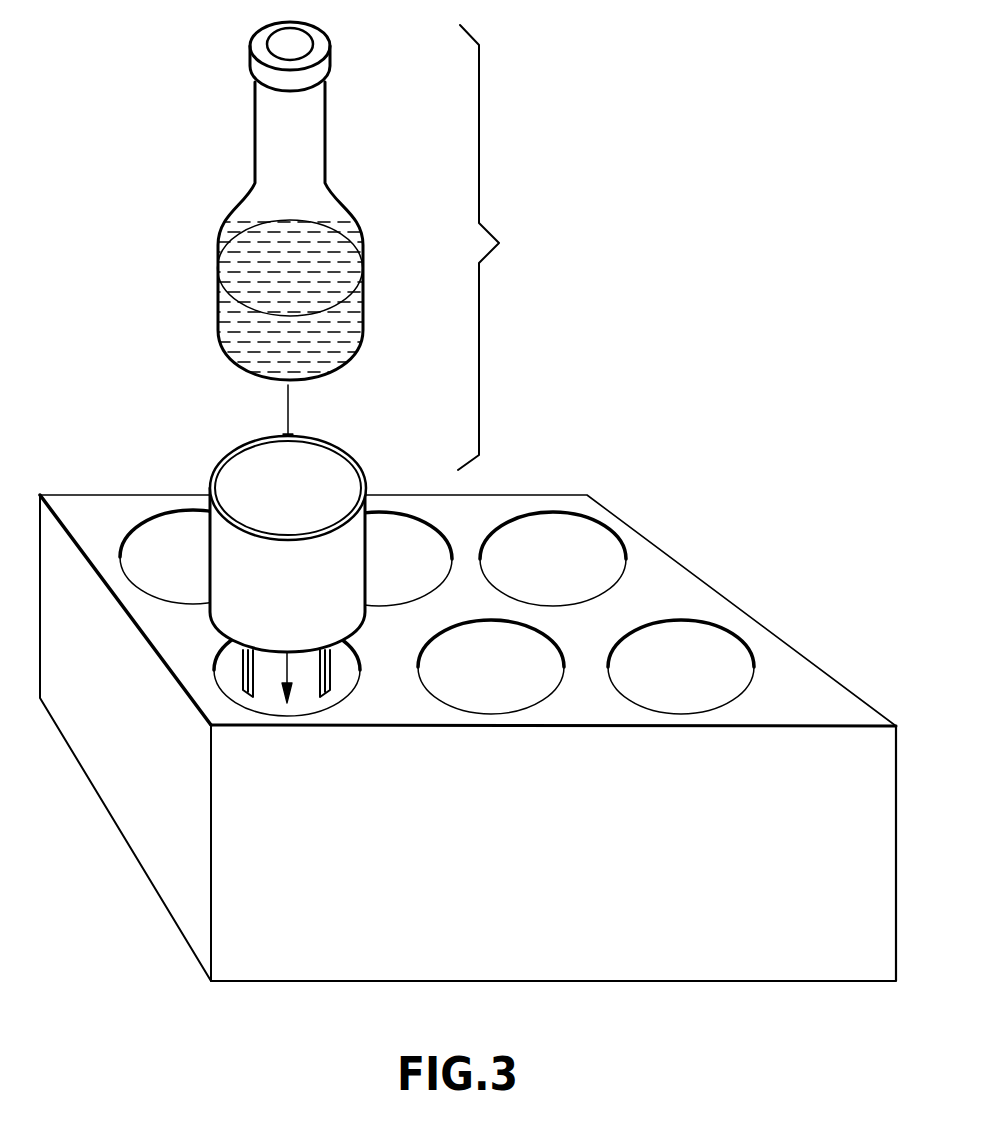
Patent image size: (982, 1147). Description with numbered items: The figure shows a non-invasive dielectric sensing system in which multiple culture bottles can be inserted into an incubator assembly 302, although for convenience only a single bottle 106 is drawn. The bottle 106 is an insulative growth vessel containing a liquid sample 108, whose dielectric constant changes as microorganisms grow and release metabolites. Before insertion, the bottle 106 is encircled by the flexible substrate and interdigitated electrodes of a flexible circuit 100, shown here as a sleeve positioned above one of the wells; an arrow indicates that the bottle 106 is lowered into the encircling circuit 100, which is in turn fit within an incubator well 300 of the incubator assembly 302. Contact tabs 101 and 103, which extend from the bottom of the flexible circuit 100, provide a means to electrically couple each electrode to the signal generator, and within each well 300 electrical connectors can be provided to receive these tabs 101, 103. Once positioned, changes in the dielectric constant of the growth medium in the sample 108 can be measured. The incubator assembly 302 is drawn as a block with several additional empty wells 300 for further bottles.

The bottle 106 is at (305, 142).
The liquid sample 108 is at (338, 333).
The flexible circuit 100 is at (228, 603).
The contact tab 101 is at (247, 670).
The contact tab 103 is at (323, 663).
The incubator well 300 is at (283, 668).
The incubator assembly 302 is at (352, 940).